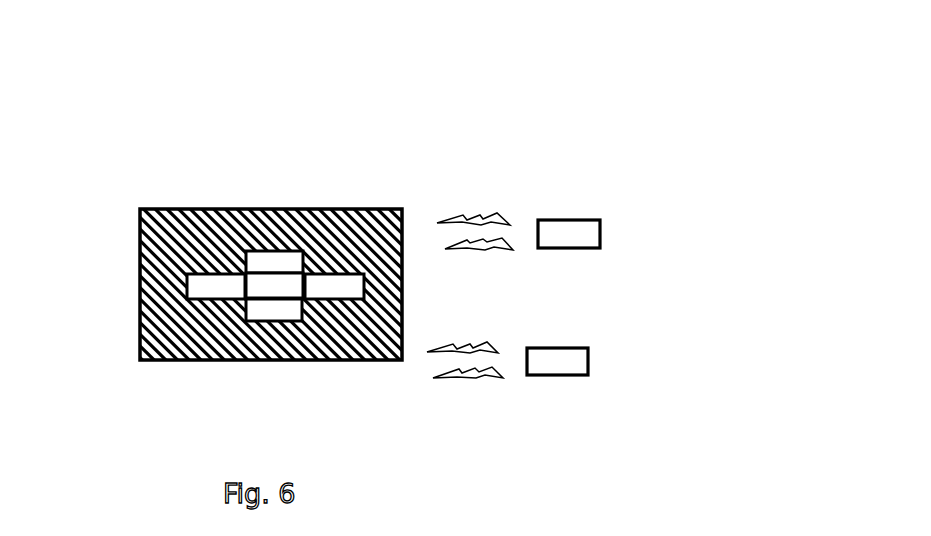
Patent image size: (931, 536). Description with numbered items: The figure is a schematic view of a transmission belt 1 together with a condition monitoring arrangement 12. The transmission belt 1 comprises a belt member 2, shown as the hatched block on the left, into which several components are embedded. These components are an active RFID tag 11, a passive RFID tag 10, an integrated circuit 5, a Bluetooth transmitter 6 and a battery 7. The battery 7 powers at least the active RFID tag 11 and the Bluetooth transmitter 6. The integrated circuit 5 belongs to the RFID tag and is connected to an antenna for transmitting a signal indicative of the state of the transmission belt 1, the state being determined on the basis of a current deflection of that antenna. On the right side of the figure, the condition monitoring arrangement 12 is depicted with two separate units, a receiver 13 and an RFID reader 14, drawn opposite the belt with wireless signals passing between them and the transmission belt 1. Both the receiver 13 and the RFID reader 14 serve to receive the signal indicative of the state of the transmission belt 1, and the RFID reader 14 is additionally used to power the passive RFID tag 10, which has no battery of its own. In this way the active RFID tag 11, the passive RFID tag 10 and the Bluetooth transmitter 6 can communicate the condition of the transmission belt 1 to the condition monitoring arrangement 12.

The transmission belt 1 is at (276, 256).
The belt member 2 is at (165, 224).
The integrated circuit 5 is at (277, 317).
The Bluetooth transmitter 6 is at (340, 287).
The battery 7 is at (263, 287).
The passive RFID tag 10 is at (263, 266).
The active RFID tag 11 is at (218, 290).
The condition monitoring arrangement 12 is at (473, 112).
The receiver 13 is at (573, 238).
The RFID reader 14 is at (559, 364).